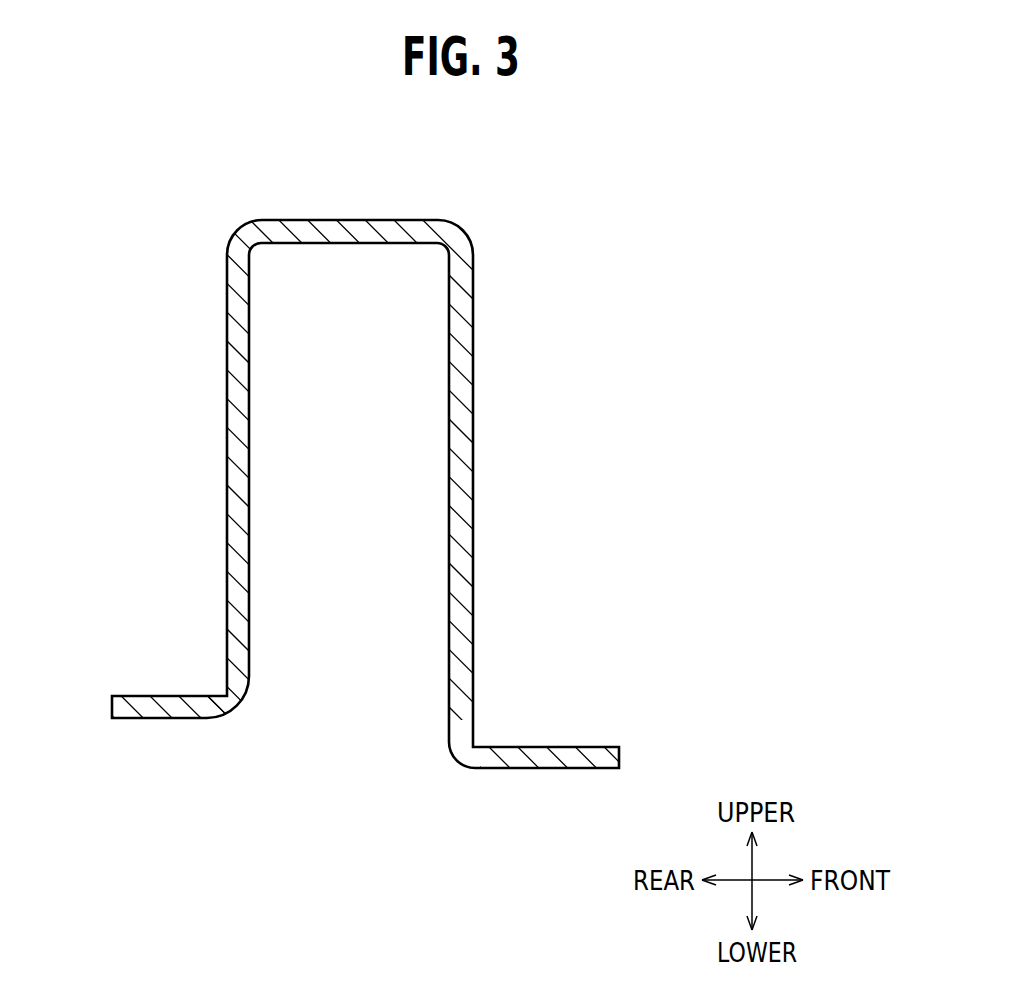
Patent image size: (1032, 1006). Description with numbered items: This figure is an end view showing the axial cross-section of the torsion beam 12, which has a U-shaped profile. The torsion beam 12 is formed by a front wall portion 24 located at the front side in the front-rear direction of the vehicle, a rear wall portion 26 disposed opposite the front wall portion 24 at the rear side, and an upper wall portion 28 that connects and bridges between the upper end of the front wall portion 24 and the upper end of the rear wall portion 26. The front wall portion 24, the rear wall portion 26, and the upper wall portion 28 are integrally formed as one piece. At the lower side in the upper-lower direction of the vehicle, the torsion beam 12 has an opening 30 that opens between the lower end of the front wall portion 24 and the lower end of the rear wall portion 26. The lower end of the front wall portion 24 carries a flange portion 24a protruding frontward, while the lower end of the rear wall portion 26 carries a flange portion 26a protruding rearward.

The torsion beam 12 is at (480, 206).
The front wall portion 24 is at (473, 470).
The flange portion 24a is at (620, 757).
The rear wall portion 26 is at (227, 477).
The flange portion 26a is at (112, 702).
The upper wall portion 28 is at (343, 220).
The opening 30 is at (250, 642).